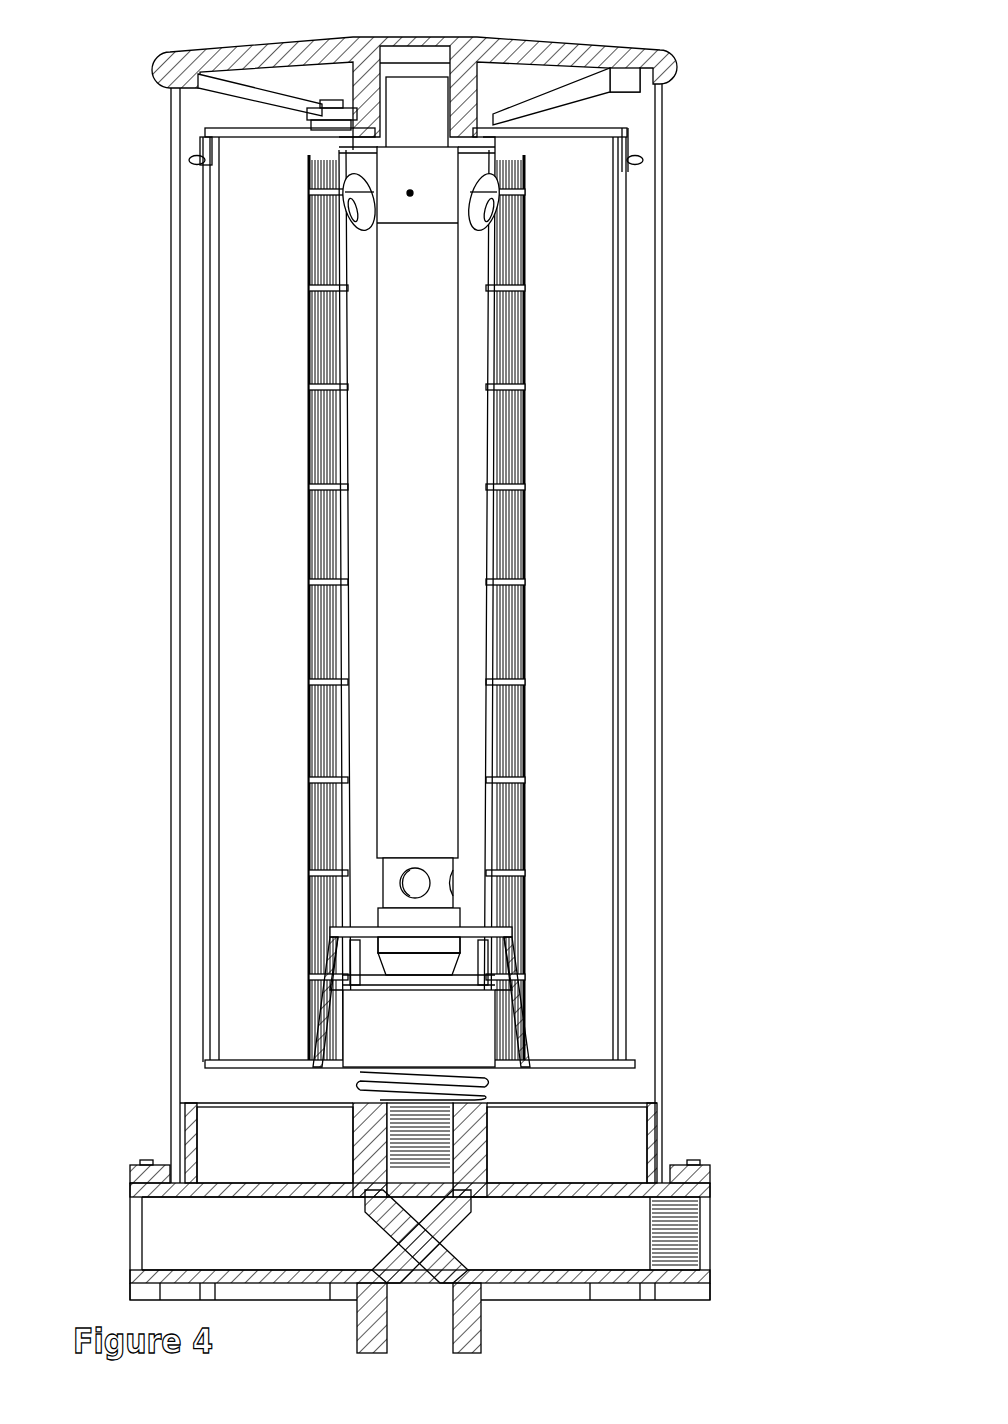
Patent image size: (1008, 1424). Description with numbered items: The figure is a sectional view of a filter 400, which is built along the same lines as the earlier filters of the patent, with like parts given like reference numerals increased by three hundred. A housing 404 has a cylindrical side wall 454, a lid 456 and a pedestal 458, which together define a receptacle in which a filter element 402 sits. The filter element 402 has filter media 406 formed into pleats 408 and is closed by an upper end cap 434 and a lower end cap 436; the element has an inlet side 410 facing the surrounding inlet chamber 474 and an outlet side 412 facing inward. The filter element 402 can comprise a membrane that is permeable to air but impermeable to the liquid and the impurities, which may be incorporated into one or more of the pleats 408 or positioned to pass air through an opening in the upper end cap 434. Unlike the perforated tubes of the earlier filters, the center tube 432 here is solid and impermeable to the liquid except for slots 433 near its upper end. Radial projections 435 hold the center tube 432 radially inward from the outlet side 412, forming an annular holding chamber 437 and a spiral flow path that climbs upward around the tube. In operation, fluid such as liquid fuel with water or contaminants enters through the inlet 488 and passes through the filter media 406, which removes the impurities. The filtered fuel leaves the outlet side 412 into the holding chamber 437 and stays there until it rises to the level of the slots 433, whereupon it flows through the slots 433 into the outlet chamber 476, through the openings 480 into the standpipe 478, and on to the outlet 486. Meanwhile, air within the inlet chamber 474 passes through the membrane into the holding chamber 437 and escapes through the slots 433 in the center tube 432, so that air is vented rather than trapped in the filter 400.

The filter 400 is at (461, 633).
The filter element 402 is at (569, 560).
The housing 404 is at (662, 507).
The filter media 406 is at (577, 703).
The pleats 408 is at (530, 730).
The inlet side 410 is at (620, 858).
The outlet side 412 is at (322, 852).
The center tube 432 is at (477, 290).
The slots 433 is at (477, 217).
The upper end cap 434 is at (612, 128).
The radial projections 435 is at (527, 407).
The lower end cap 436 is at (600, 1068).
The annular holding chamber 437 is at (508, 353).
The side wall 454 is at (665, 598).
The lid 456 is at (600, 44).
The pedestal 458 is at (690, 1162).
The inlet chamber 474 is at (197, 574).
The outlet chamber 476 is at (361, 408).
The standpipe 478 is at (440, 783).
The openings 480 is at (455, 880).
The outlet 486 is at (163, 1240).
The inlet 488 is at (690, 1230).